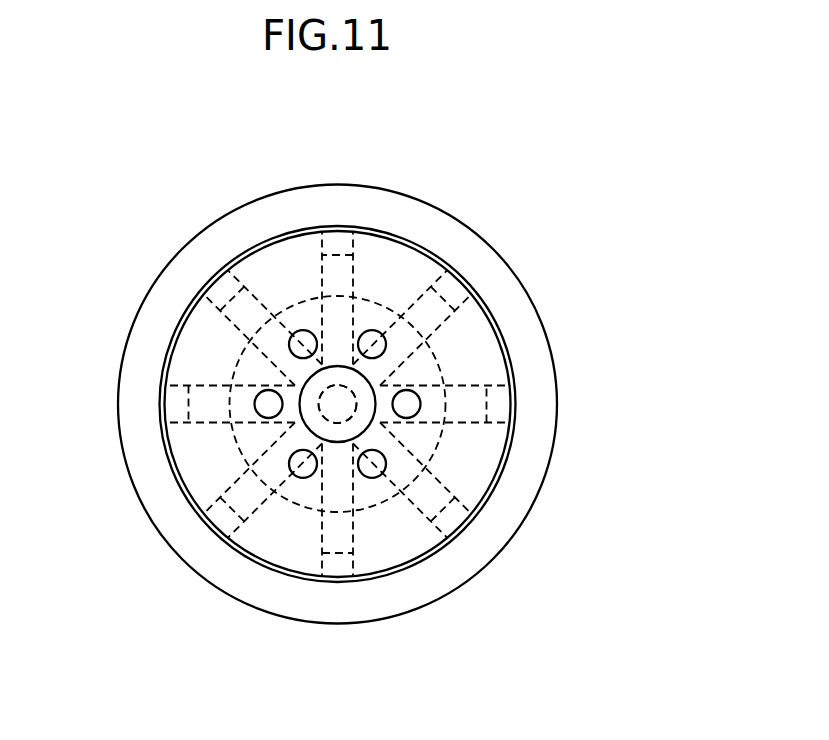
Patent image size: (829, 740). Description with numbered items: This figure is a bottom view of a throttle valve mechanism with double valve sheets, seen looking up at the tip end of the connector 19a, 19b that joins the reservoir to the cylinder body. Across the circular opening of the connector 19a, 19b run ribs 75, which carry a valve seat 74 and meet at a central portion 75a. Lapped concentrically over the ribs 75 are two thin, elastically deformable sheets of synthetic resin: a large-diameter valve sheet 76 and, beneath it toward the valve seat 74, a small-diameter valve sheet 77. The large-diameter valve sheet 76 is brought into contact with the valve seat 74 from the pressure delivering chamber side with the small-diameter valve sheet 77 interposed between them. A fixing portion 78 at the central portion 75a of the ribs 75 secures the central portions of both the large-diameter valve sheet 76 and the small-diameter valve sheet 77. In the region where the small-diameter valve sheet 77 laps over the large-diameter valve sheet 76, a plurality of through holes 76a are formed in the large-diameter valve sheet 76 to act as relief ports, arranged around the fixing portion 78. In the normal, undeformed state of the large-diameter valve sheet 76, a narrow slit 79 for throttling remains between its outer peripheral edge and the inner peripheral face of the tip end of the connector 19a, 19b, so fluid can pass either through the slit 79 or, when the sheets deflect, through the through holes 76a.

The connector 19a is at (410, 404).
The connector 19b is at (507, 298).
The slit 79 is at (515, 368).
The large-diameter valve sheet 76 is at (270, 543).
The through holes 76a is at (378, 463).
The fixing portion 78 is at (341, 436).
The central portion 75a is at (332, 403).
The valve seat 74 is at (182, 407).
The ribs 75 is at (423, 313).
The small-diameter valve sheet 77 is at (430, 556).